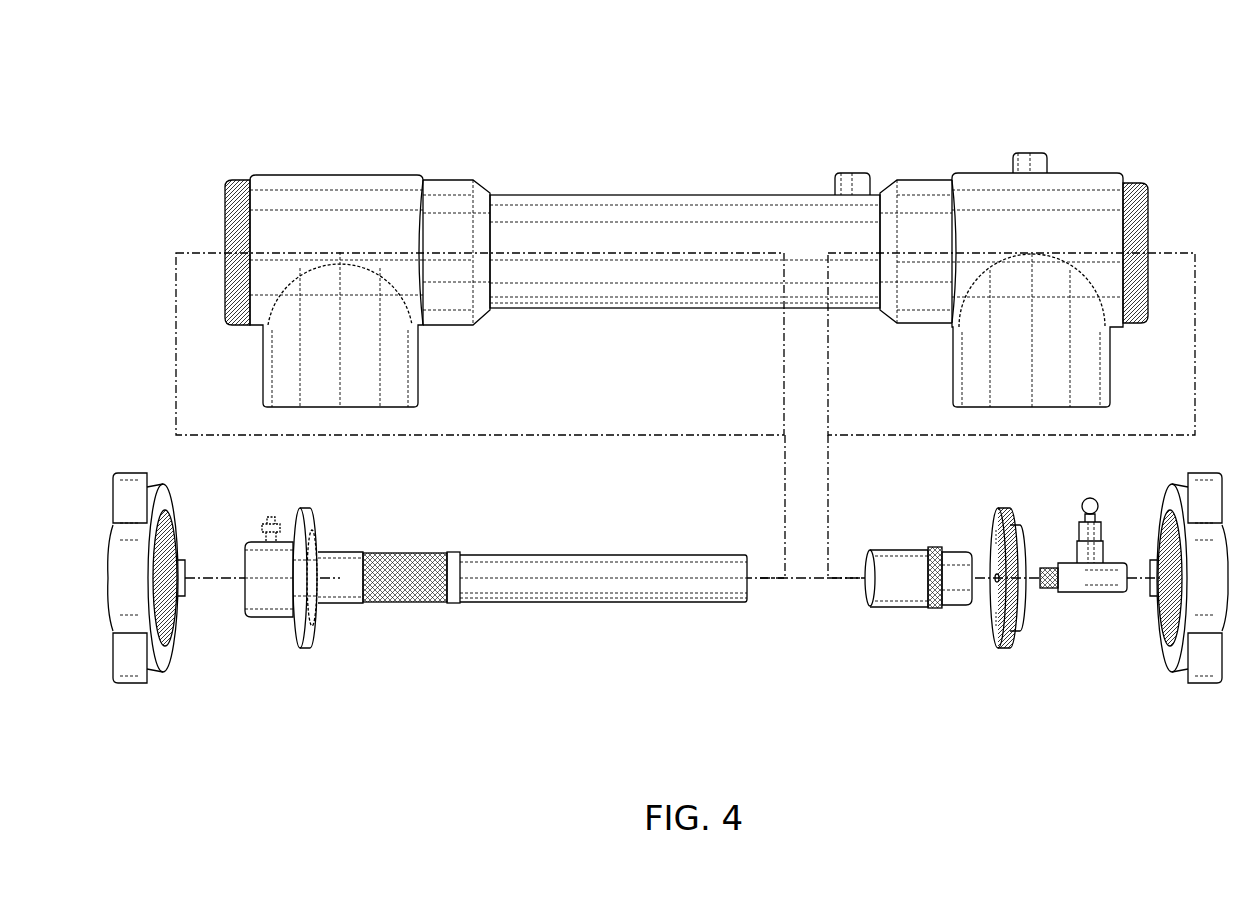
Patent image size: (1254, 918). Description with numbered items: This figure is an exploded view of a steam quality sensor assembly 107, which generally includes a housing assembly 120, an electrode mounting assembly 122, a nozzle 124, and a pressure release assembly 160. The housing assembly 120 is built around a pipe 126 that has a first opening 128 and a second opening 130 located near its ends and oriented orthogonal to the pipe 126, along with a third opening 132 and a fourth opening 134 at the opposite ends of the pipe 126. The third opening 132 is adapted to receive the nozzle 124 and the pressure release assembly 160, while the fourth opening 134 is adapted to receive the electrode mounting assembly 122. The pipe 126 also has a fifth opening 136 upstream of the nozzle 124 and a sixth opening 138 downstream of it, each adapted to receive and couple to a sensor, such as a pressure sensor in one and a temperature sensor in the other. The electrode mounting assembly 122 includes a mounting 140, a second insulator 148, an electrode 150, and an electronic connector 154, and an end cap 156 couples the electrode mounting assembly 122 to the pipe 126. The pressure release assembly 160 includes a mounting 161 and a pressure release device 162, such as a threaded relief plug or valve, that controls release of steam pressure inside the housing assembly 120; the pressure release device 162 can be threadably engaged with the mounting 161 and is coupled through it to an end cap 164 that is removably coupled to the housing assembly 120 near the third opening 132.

The steam quality sensor assembly 107 is at (178, 76).
The housing assembly 120 is at (223, 133).
The electrode mounting assembly 122 is at (747, 717).
The nozzle 124 is at (905, 607).
The pipe 126 is at (663, 195).
The first opening 128 is at (1028, 407).
The second opening 130 is at (340, 407).
The third opening 132 is at (1148, 212).
The fourth opening 134 is at (225, 209).
The fifth opening 136 is at (1028, 153).
The sixth opening 138 is at (852, 173).
The mounting 140 is at (305, 648).
The second insulator 148 is at (407, 602).
The electrode 150 is at (633, 555).
The electronic connector 154 is at (270, 518).
The end cap 156 is at (182, 633).
The pressure release assembly 160 is at (985, 717).
The mounting 161 is at (993, 645).
The pressure release device 162 is at (1090, 592).
The end cap 164 is at (1165, 492).